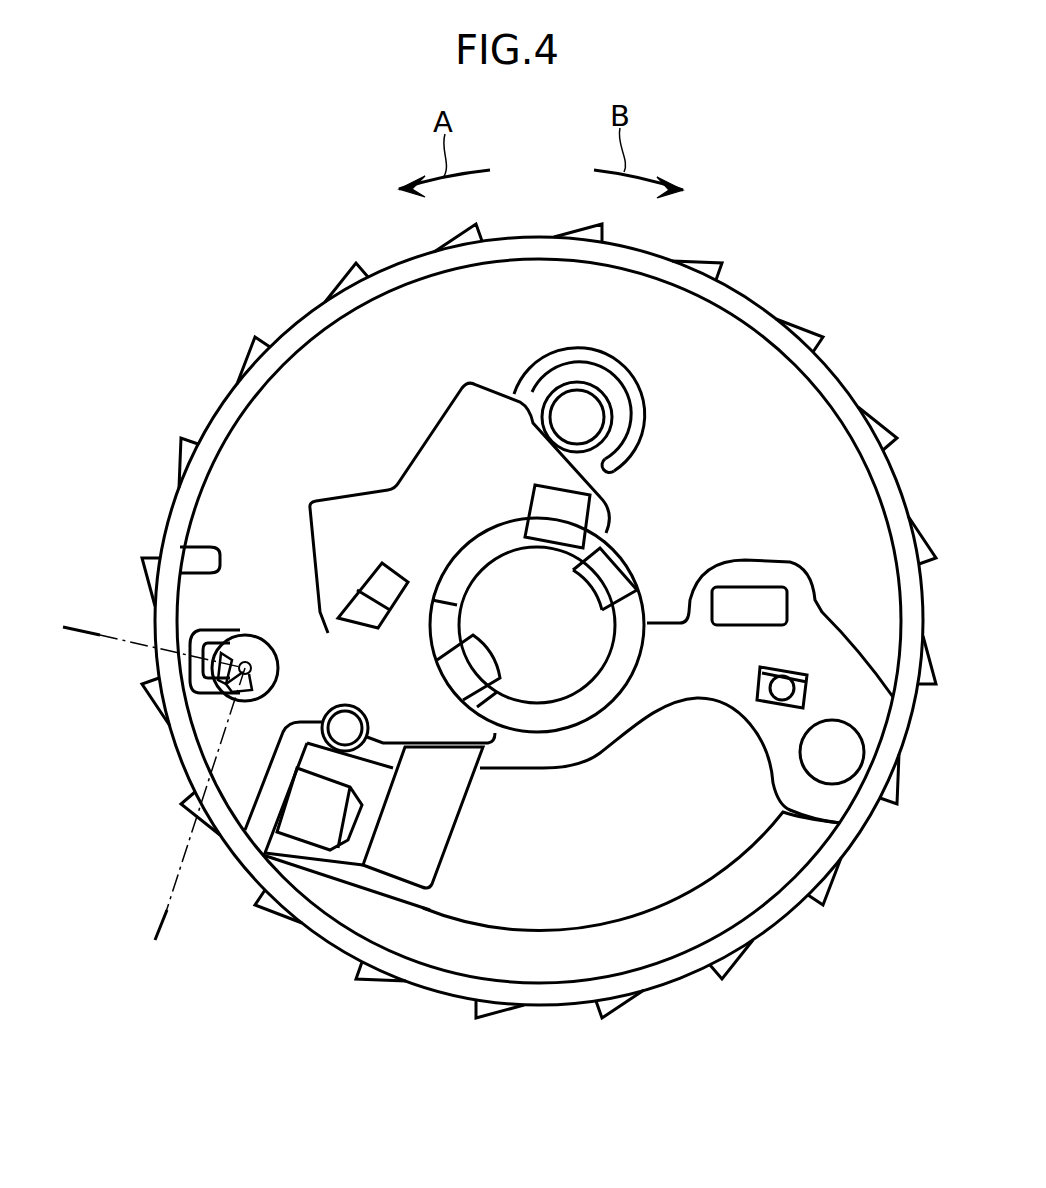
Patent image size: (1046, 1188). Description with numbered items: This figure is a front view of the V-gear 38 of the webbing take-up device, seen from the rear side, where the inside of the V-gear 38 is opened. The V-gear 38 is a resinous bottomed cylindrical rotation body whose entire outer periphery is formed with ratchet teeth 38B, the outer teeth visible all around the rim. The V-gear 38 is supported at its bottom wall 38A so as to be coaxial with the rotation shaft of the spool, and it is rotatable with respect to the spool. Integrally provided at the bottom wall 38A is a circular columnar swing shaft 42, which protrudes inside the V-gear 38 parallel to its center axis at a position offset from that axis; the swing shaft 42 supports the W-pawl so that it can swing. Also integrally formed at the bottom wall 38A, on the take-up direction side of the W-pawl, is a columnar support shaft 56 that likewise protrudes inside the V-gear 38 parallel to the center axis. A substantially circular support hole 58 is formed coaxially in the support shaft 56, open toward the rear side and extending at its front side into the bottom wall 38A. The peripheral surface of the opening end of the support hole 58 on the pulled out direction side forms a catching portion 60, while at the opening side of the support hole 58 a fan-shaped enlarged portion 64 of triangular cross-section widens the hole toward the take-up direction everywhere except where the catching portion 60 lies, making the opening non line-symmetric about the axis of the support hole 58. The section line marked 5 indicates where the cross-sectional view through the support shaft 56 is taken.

The V-gear 38 is at (203, 194).
The bottom wall 38A is at (258, 418).
The ratchet teeth 38B is at (484, 236).
The swing shaft 42 is at (588, 400).
The support shaft 56 is at (233, 640).
The support hole 58 is at (228, 678).
The catching portion 60 is at (279, 670).
The enlarged portion 64 is at (247, 690).
The section line 5- 5 is at (77, 634).